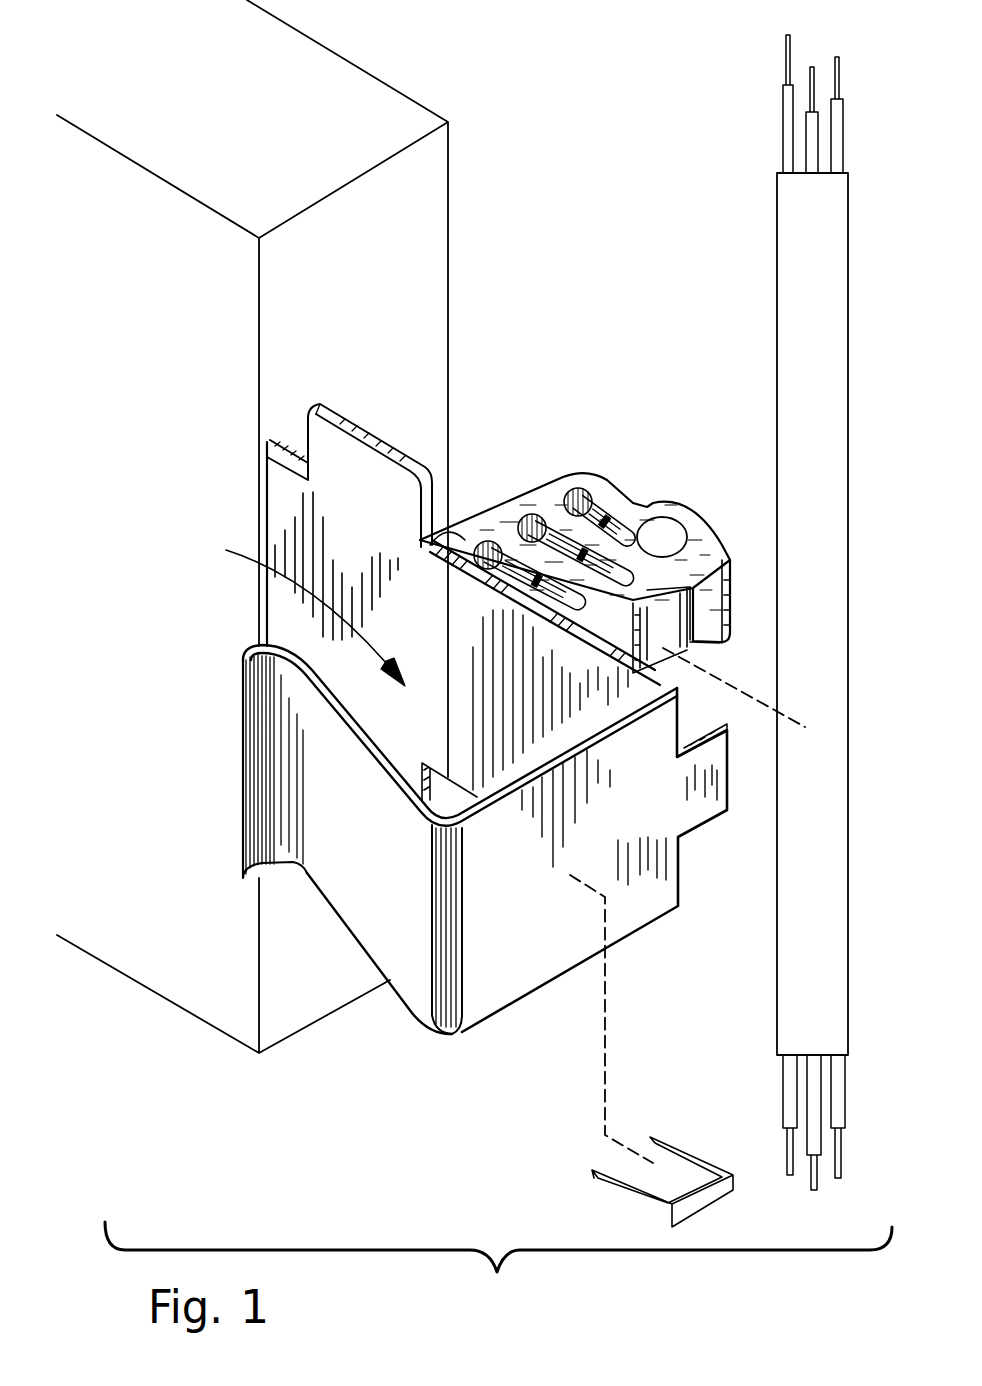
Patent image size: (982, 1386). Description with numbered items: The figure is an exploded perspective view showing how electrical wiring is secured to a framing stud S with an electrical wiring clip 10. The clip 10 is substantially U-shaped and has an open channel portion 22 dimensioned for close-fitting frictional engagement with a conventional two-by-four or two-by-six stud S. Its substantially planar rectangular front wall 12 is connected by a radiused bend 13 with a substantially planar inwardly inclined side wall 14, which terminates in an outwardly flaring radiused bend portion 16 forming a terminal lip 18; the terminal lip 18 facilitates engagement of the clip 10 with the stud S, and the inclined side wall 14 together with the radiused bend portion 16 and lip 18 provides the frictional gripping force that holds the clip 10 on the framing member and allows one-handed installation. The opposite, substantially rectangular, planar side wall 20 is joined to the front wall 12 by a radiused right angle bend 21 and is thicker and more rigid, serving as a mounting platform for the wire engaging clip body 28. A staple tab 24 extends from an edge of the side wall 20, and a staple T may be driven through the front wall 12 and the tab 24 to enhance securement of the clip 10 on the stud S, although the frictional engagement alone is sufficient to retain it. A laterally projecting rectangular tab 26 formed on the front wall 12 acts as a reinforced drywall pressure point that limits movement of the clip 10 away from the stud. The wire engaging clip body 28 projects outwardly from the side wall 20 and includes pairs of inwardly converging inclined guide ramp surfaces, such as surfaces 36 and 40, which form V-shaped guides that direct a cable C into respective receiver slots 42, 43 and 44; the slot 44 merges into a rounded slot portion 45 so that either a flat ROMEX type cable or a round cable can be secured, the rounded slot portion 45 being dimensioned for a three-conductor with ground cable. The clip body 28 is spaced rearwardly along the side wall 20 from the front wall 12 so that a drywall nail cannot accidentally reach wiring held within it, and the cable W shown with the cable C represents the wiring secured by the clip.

The electrical wiring clip 10 is at (283, 1104).
The front wall 12 is at (455, 687).
The radiused bend 13 is at (443, 967).
The inwardly inclined side wall 14 is at (357, 893).
The radiused bend portion 16 is at (278, 801).
The terminal lip 18 is at (240, 754).
The side wall 20 is at (460, 575).
The radiused right angle bend 21 is at (675, 727).
The open channel portion 22 is at (302, 612).
The staple tab 24 is at (362, 450).
The laterally projecting rectangular tab 26 is at (693, 815).
The wire engaging clip body 28 is at (594, 522).
The inclined guide ramp surface 36 is at (662, 633).
The inclined guide ramp surface 40 is at (693, 572).
The receiver slot 42 is at (577, 479).
The receiver slot 43 is at (538, 550).
The receiver slot 44 is at (617, 517).
The rounded slot portion 45 is at (660, 533).
The stud S is at (438, 198).
The cable C is at (840, 318).
The wires W is at (837, 130).
The staple T is at (647, 1207).